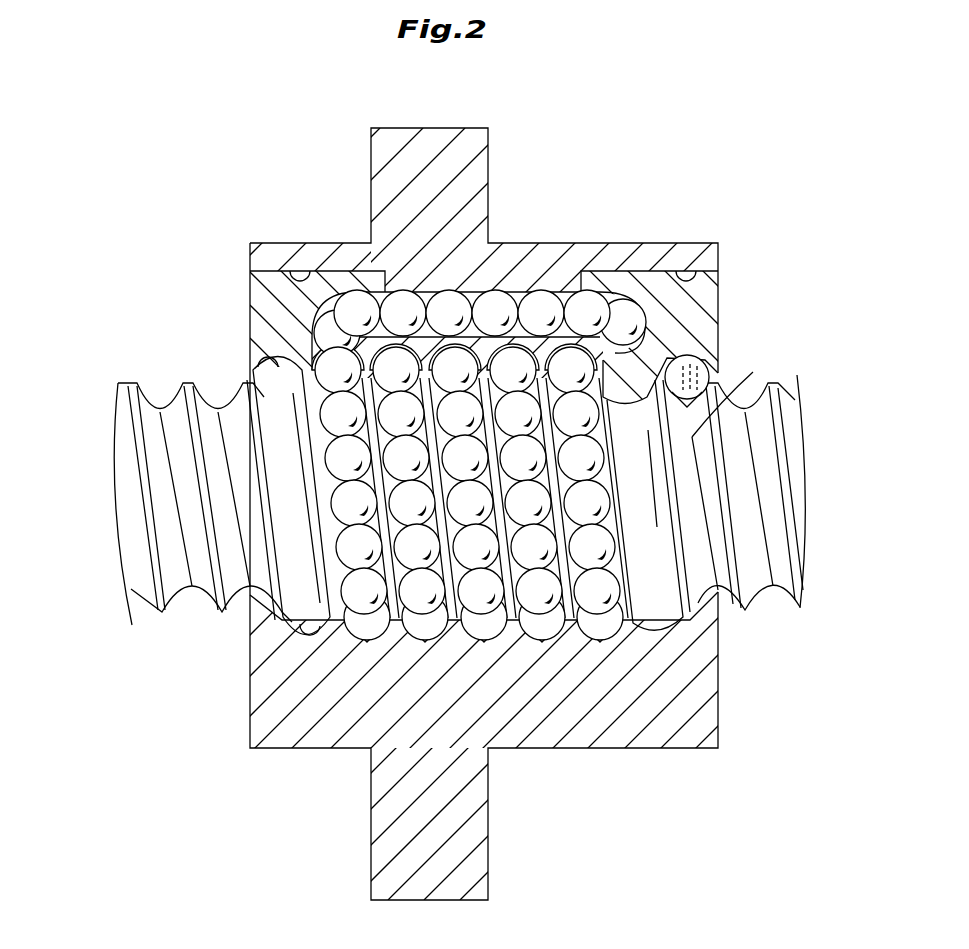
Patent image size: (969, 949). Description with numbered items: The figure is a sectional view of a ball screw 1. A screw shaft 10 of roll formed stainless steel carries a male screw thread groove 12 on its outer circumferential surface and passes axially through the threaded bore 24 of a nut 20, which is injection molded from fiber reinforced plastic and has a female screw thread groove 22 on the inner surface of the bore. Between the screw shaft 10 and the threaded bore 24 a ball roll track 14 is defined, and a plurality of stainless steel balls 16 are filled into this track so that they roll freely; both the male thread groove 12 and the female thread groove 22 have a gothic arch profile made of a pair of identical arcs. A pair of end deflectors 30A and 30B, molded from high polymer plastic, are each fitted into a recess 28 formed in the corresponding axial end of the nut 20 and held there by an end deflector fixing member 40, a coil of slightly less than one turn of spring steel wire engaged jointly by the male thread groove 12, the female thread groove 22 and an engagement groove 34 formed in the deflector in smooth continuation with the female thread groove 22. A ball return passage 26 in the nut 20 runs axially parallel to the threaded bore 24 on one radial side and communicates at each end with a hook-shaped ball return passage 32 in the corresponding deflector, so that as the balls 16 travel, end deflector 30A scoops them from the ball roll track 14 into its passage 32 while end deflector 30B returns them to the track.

The ball screw 1 is at (200, 127).
The screw shaft 10 is at (160, 615).
The male screw thread groove 12 is at (694, 436).
The ball roll track 14 is at (482, 625).
The balls 16 is at (357, 605).
The nut 20 is at (530, 235).
The female screw thread groove 22 is at (598, 632).
The threaded bore 24 is at (538, 625).
The ball return passage 26 is at (457, 300).
The recess 28 is at (688, 276).
The end deflector 30A is at (240, 296).
The end deflector 30B is at (730, 291).
The ball return passage 32 is at (622, 305).
The engagement groove 34 is at (712, 368).
The end deflector fixing member 40 is at (645, 520).